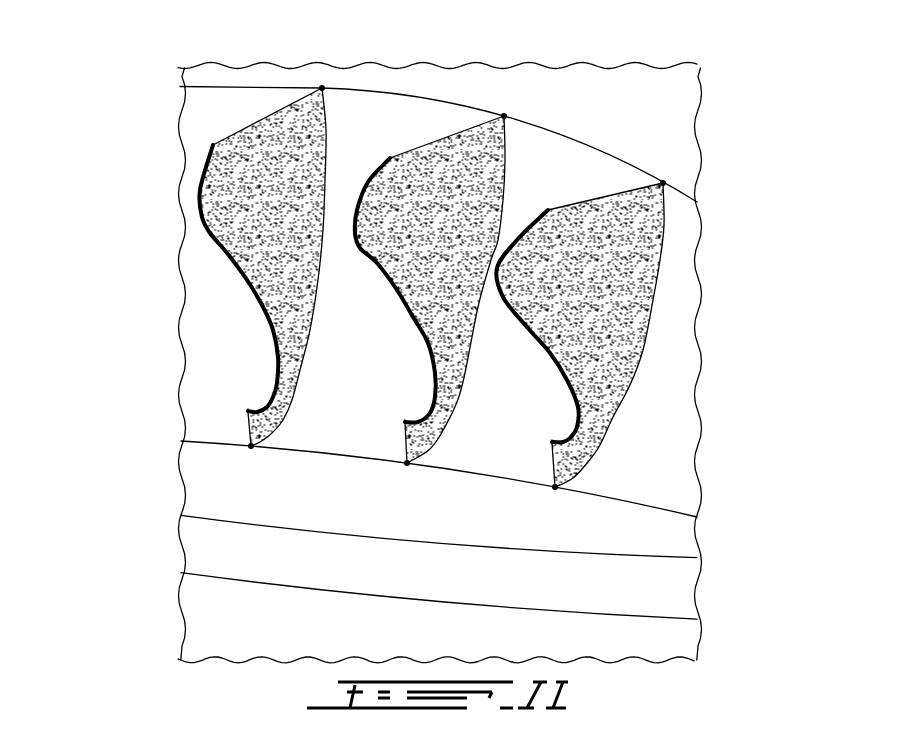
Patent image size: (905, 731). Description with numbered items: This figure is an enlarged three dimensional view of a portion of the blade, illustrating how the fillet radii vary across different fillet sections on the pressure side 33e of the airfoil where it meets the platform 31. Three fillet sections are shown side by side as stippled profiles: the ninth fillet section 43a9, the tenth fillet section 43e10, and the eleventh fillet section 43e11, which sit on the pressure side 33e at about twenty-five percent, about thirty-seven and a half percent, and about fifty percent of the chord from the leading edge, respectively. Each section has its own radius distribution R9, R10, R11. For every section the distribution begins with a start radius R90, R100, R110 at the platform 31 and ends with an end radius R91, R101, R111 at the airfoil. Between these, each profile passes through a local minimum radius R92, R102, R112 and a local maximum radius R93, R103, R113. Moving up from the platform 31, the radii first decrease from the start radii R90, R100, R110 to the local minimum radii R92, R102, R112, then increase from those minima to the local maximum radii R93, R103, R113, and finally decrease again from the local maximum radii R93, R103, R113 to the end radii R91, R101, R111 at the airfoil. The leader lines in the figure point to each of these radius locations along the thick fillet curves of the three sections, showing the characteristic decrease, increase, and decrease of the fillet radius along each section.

The pressure side 33e is at (618, 93).
The platform 31 is at (632, 585).
The eleventh fillet section 43e11 is at (177, 262).
The radius distribution R11 is at (177, 262).
The end radius R111 is at (260, 123).
The local maximum radius R113 is at (200, 206).
The local minimum radius R112 is at (268, 404).
The start radius R110 is at (251, 446).
The tenth fillet section 43e10 is at (455, 260).
The radius distribution R10 is at (455, 260).
The end radius R101 is at (430, 138).
The local maximum radius R103 is at (357, 220).
The local minimum radius R102 is at (418, 413).
The start radius R100 is at (405, 443).
The ninth fillet section 43a9 is at (661, 329).
The radius distribution R9 is at (661, 329).
The end radius R91 is at (607, 197).
The local maximum radius R93 is at (497, 268).
The local minimum radius R92 is at (580, 439).
The start radius R90 is at (552, 465).